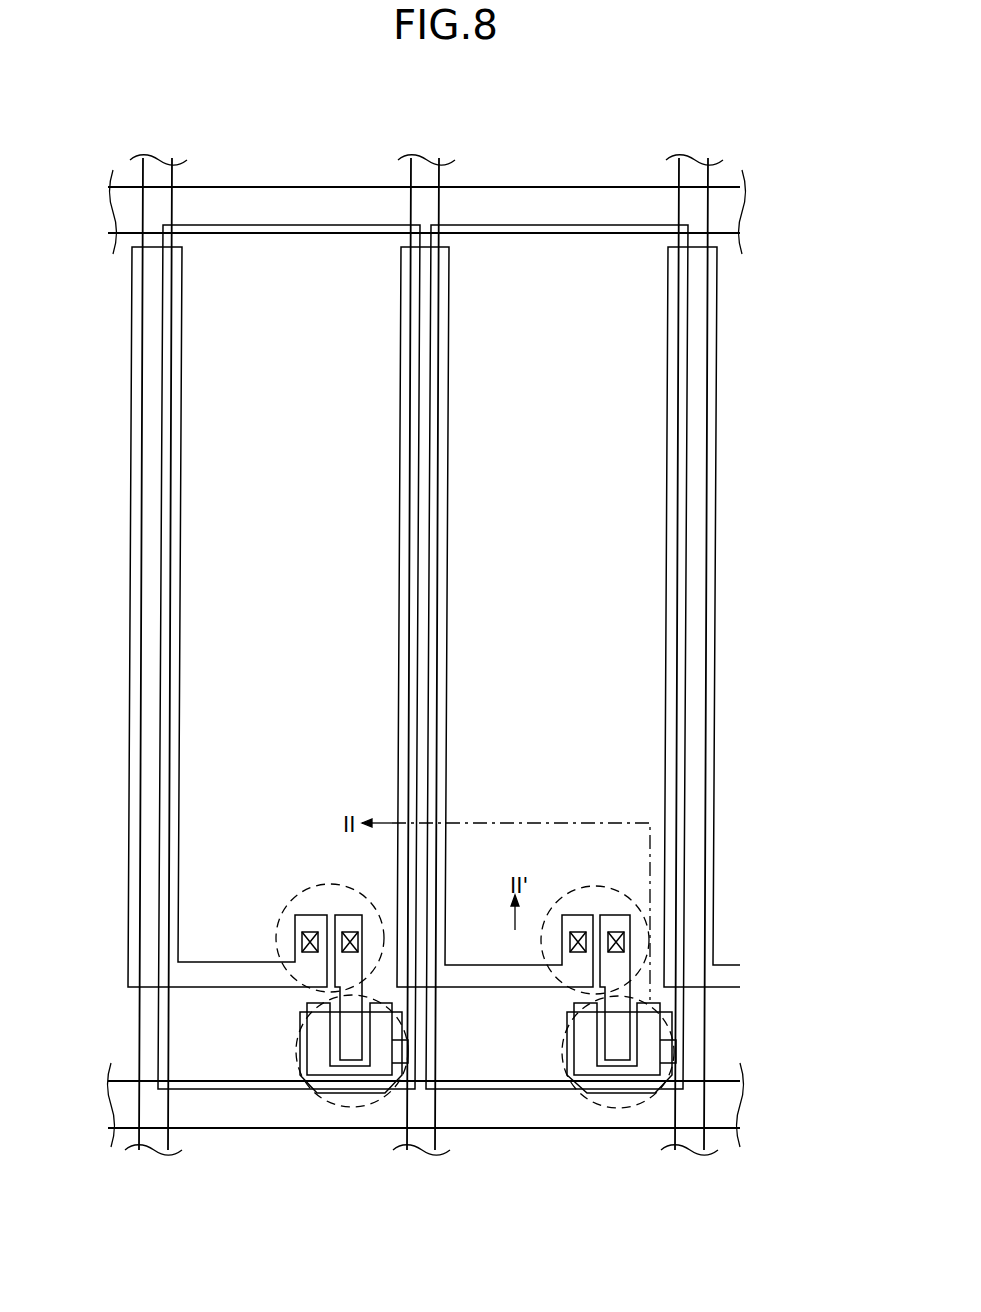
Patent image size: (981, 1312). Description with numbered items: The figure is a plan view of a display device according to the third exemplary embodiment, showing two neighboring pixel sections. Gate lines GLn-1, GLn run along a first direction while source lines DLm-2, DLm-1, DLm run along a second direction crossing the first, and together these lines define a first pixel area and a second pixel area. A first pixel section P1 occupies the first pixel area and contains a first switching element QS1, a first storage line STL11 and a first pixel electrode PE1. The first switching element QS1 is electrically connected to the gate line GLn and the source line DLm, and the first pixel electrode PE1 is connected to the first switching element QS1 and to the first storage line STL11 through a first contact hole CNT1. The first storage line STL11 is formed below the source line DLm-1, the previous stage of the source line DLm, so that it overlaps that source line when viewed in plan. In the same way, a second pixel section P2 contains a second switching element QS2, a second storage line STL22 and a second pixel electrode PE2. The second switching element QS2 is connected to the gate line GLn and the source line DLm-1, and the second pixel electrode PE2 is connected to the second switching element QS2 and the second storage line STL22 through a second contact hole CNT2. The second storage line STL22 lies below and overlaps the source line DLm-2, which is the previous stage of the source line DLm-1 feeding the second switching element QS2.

The gate line GLn-1 is at (740, 212).
The gate line GLn is at (740, 1105).
The source line DLm-2 is at (149, 1162).
The source line DLm-1 is at (425, 1162).
The source line DLm is at (688, 1162).
The second storage line STL22 is at (133, 899).
The first storage line STL11 is at (449, 748).
The second pixel electrode PE2 is at (150, 818).
The first pixel electrode PE1 is at (688, 485).
The second pixel section P2 is at (303, 425).
The first pixel section P1 is at (563, 425).
The second contact hole CNT2 is at (290, 935).
The first contact hole CNT1 is at (623, 942).
The second switching element QS2 is at (350, 1108).
The first switching element QS1 is at (620, 1110).